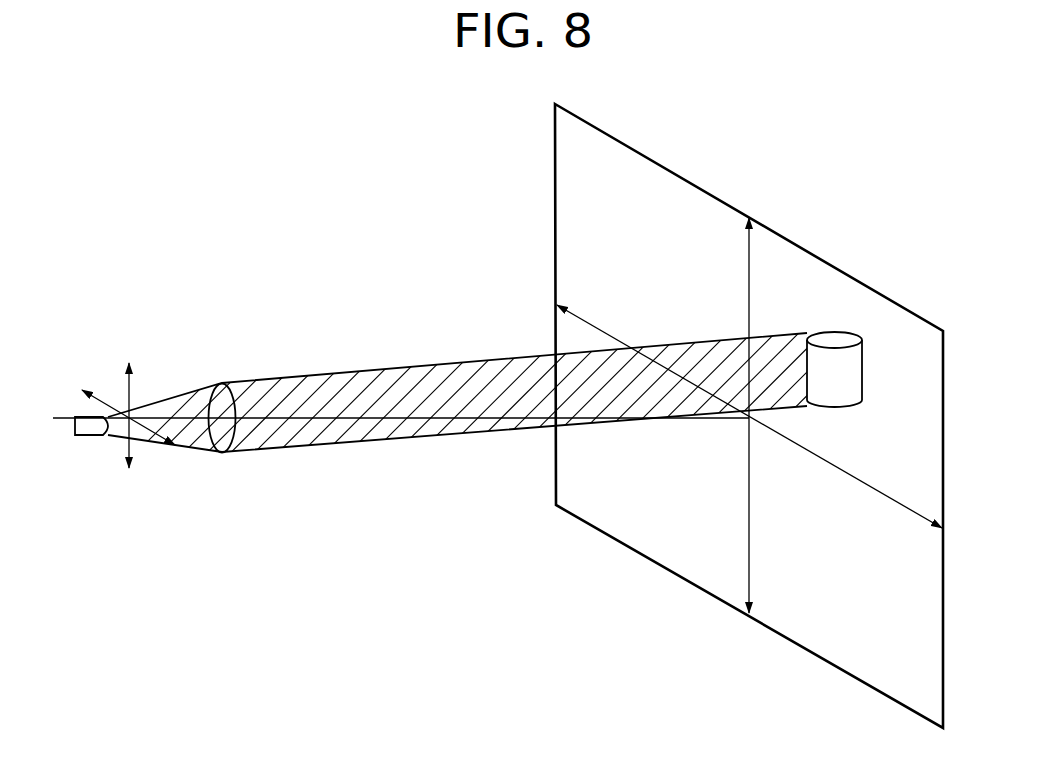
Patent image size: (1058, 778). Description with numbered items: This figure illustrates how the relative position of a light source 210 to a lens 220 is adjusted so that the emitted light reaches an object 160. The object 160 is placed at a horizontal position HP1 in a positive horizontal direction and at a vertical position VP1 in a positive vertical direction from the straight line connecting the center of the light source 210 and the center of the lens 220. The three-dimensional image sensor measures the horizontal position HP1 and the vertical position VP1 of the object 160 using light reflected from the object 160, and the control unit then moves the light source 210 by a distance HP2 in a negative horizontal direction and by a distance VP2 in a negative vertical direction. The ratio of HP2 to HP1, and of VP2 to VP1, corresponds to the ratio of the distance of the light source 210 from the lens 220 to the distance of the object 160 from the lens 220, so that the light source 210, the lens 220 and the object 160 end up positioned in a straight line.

The object 160 is at (839, 333).
The light source 210 is at (81, 436).
The lens 220 is at (224, 383).
The horizontal position HP1 is at (833, 461).
The vertical position VP1 is at (753, 320).
The adjusted horizontal position HP2 is at (125, 402).
The adjusted vertical position VP2 is at (153, 428).